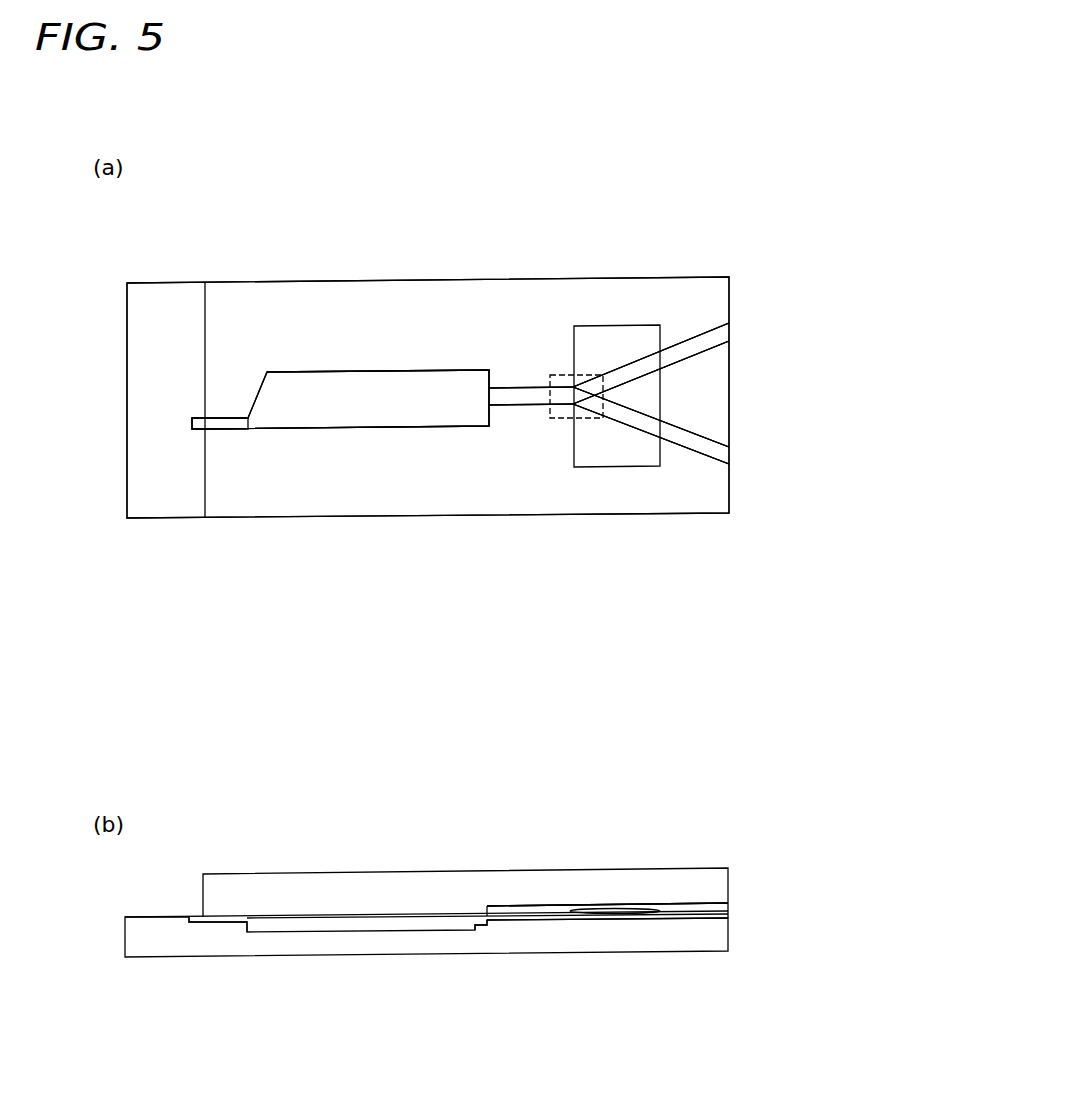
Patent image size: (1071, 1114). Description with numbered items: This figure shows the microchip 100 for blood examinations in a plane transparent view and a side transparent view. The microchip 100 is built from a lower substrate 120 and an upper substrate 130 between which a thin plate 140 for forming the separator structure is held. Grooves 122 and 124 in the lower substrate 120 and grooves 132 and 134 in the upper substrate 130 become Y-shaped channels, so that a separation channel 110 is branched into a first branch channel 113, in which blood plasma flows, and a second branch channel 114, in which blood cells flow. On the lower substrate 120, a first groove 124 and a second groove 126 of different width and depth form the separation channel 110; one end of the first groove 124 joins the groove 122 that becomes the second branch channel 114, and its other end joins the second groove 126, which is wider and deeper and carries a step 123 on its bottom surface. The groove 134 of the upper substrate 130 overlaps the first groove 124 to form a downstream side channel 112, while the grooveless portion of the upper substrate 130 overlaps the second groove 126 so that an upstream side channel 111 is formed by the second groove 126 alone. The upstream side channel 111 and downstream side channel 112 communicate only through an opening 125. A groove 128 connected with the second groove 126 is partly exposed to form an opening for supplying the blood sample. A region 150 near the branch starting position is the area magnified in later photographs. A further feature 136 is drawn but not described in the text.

The microchip 100 is at (721, 171).
The separation channel 110 is at (468, 593).
The upstream side channel 111 is at (372, 405).
The downstream side channel 112 is at (527, 398).
The first branch channel 113 is at (680, 435).
The second branch channel 114 is at (675, 357).
The lower substrate 120 is at (158, 300).
The groove 122 is at (703, 342).
The step 123 is at (472, 930).
The first groove 124 is at (540, 387).
The opening 125 is at (487, 397).
The second groove 126 is at (340, 386).
The groove 128 is at (217, 417).
The upper substrate 130 is at (222, 300).
The groove 132 is at (700, 450).
The groove 134 is at (513, 908).
The cladding layer 136 is at (688, 903).
The thin plate 140 is at (615, 326).
The region 150 is at (553, 418).